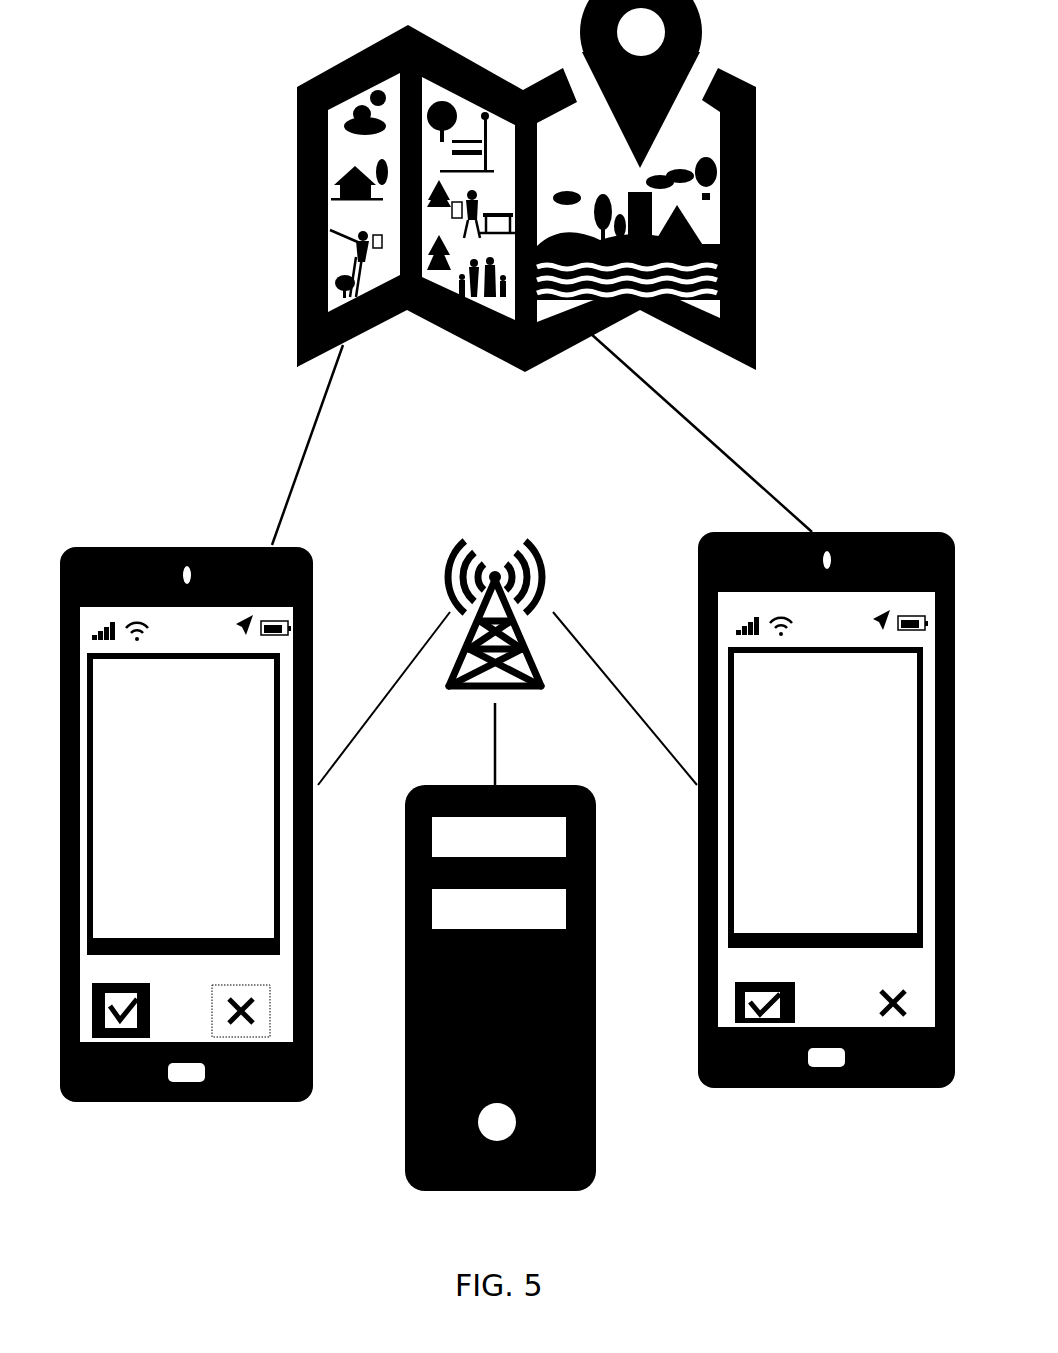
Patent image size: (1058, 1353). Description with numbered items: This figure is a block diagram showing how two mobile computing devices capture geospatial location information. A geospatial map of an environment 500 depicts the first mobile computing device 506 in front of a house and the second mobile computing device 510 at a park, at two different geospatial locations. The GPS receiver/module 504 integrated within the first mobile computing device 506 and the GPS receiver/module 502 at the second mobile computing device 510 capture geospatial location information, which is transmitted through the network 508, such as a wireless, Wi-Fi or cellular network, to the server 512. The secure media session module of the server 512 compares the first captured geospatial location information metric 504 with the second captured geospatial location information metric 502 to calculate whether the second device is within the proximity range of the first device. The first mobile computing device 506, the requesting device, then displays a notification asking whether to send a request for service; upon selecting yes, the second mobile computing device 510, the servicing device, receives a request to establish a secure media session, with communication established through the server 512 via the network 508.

The geospatial map of an environment 500 is at (766, 168).
The GPS receiver/module of the second mobile computing device 502 is at (460, 205).
The GPS receiver/module of the first mobile computing device 504 is at (298, 222).
The first mobile computing device 506 is at (183, 545).
The network 508 is at (504, 527).
The second mobile computing device 510 is at (860, 532).
The server 512 is at (393, 1125).